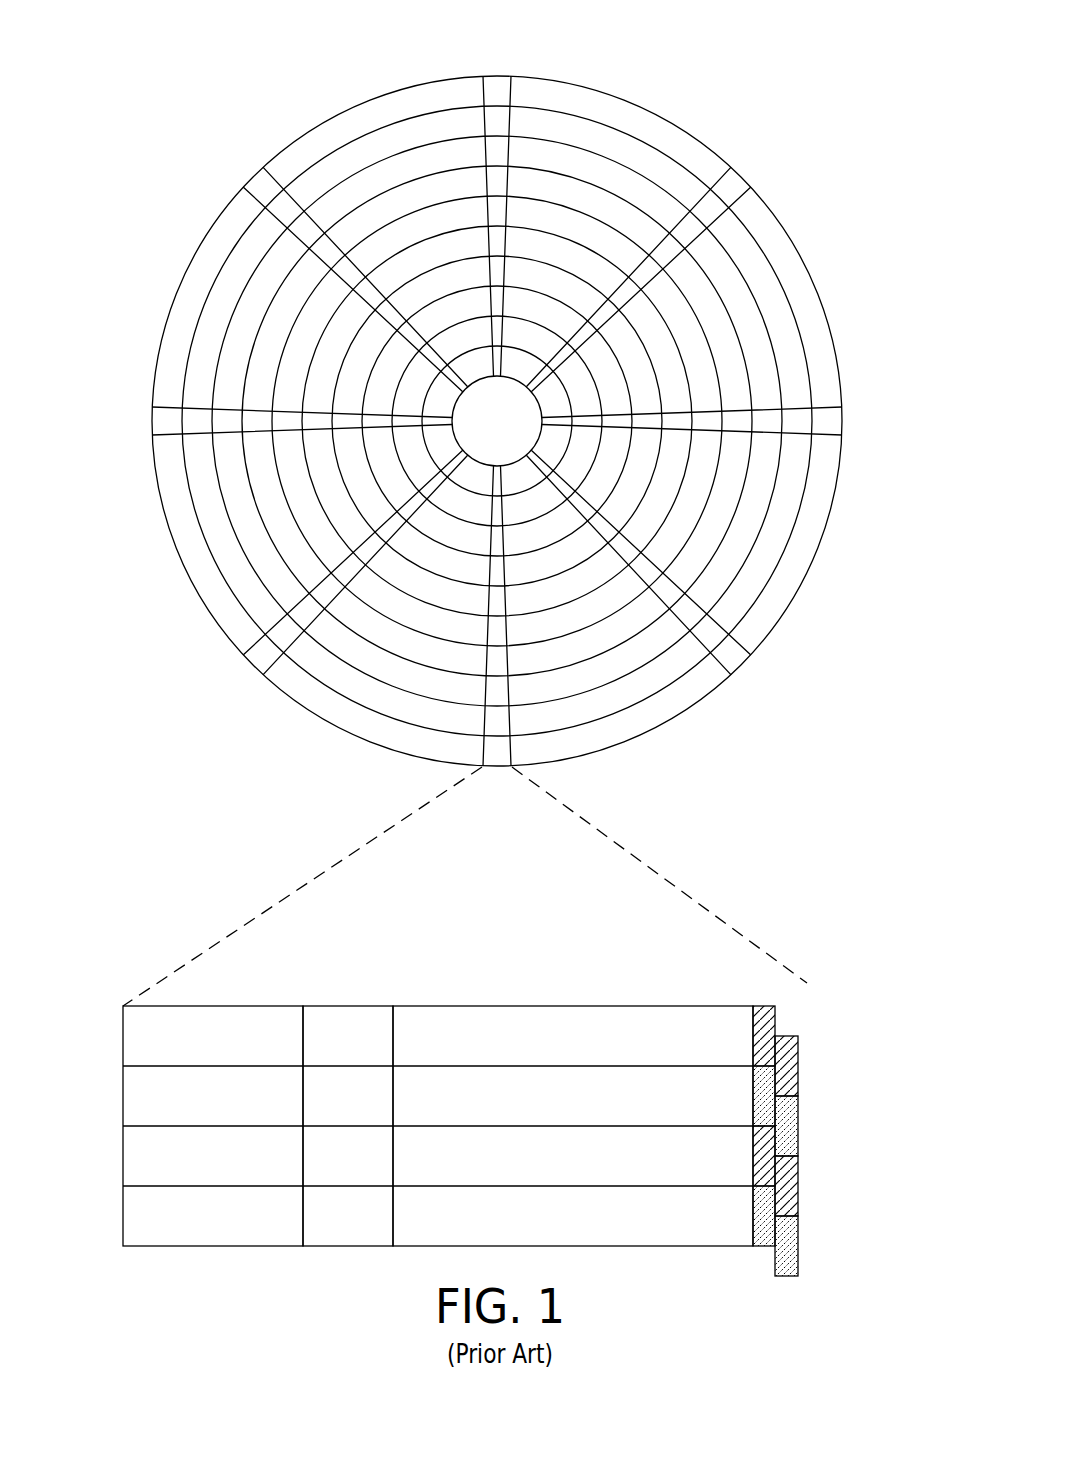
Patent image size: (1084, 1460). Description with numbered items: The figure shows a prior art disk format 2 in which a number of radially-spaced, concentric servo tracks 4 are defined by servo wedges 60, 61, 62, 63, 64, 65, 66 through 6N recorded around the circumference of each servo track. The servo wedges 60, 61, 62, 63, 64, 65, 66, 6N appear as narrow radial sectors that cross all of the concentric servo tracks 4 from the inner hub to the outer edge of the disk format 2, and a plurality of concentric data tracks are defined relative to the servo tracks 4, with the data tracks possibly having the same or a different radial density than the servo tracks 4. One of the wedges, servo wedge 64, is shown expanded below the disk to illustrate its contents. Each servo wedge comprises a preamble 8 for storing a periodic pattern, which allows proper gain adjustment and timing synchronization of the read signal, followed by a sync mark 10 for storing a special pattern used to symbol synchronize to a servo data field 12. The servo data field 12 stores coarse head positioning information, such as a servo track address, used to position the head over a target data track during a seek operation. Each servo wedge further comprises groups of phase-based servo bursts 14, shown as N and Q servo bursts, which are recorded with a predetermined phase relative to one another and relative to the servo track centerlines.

The disk format 2 is at (241, 79).
The servo tracks 4 is at (638, 127).
The servo wedge 60 is at (498, 88).
The servo wedge 61 is at (731, 176).
The servo wedge 62 is at (833, 420).
The servo wedge 63 is at (735, 665).
The servo wedge 64 is at (342, 846).
The servo wedge 65 is at (260, 660).
The servo wedge 66 is at (162, 421).
The servo wedge 6N is at (262, 186).
The preamble 8 is at (222, 1006).
The sync mark 10 is at (349, 1006).
The servo data field 12 is at (561, 1006).
The servo bursts 14 is at (793, 1003).